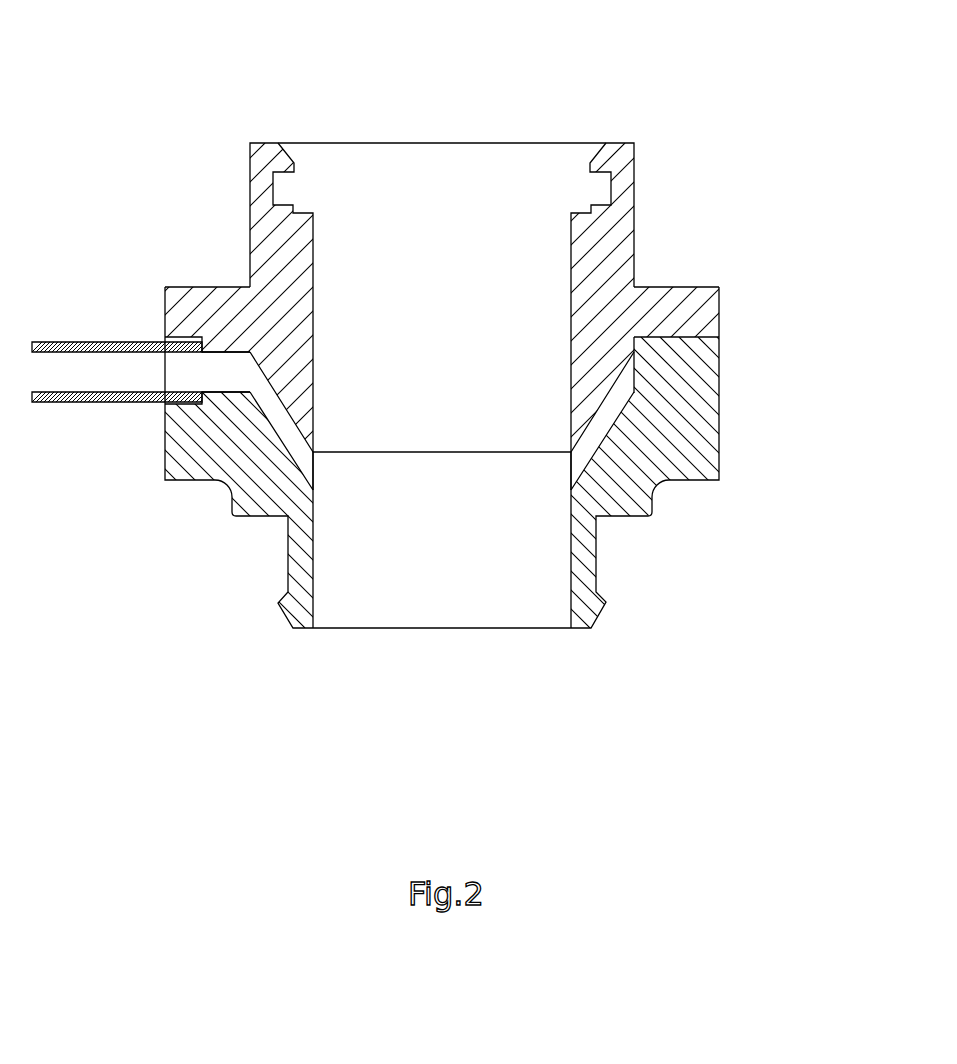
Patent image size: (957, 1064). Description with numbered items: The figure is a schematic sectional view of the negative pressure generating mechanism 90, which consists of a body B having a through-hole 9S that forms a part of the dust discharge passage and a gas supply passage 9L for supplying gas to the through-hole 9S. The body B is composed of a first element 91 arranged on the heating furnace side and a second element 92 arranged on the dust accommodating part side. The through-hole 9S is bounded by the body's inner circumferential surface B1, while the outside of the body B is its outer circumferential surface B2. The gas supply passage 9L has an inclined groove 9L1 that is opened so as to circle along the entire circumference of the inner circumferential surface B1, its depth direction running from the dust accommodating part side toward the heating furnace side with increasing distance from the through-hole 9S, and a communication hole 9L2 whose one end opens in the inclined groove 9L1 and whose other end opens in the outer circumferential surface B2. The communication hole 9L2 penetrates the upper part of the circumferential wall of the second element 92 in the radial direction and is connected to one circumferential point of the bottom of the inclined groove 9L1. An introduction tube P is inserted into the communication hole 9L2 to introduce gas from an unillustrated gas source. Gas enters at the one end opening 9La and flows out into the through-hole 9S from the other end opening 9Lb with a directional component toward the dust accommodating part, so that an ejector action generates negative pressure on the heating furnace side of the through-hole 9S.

The negative pressure generating mechanism 90 is at (136, 96).
The introduction tube P is at (54, 342).
The one end opening 9La is at (163, 370).
The inner circumferential surface B1 is at (315, 260).
The outer circumferential surface B2 is at (165, 452).
The body B is at (838, 315).
The first element 91 is at (720, 312).
The second element 92 is at (720, 377).
The through-hole 9S is at (456, 353).
The gas supply passage 9L is at (258, 565).
The inclined groove 9L1 is at (288, 430).
The communication hole 9L2 is at (227, 370).
The other end opening 9Lb is at (315, 472).